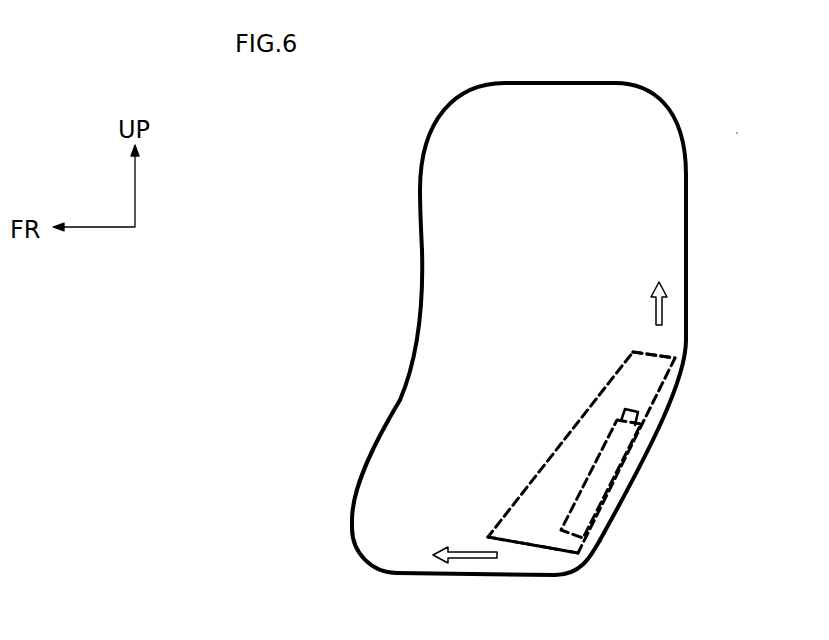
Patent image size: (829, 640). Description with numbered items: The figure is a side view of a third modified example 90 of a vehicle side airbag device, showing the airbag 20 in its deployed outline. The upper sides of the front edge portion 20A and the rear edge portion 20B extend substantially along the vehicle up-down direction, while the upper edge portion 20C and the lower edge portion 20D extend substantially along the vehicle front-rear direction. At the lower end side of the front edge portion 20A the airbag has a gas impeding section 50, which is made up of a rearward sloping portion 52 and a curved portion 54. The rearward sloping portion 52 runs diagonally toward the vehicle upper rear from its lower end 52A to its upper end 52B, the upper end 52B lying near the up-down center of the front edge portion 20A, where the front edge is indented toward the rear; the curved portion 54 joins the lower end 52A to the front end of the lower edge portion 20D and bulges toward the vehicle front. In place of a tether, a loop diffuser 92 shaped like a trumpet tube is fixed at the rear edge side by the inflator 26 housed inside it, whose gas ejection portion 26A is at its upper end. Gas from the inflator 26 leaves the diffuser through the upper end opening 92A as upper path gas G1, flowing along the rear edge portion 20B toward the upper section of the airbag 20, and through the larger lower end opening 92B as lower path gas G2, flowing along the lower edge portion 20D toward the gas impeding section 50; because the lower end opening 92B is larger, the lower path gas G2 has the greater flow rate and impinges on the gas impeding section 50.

The airbag 20 is at (668, 112).
The front edge portion 20A is at (419, 232).
The rear edge portion 20B is at (688, 256).
The upper edge portion 20C is at (537, 82).
The lower edge portion 20D is at (412, 574).
The gas impeding section 50 is at (378, 445).
The rearward sloping portion 52 is at (398, 403).
The lower end 52A is at (355, 505).
The upper end 52B is at (417, 343).
The curved portion 54 is at (351, 540).
The third modified example 90 is at (737, 133).
The loop diffuser 92 is at (570, 432).
The upper end opening 92A is at (648, 352).
The lower end opening 92B is at (548, 552).
The inflator 26 is at (618, 472).
The gas ejection portion 26A is at (648, 415).
The upper path gas G1 is at (661, 308).
The lower path gas G2 is at (472, 560).